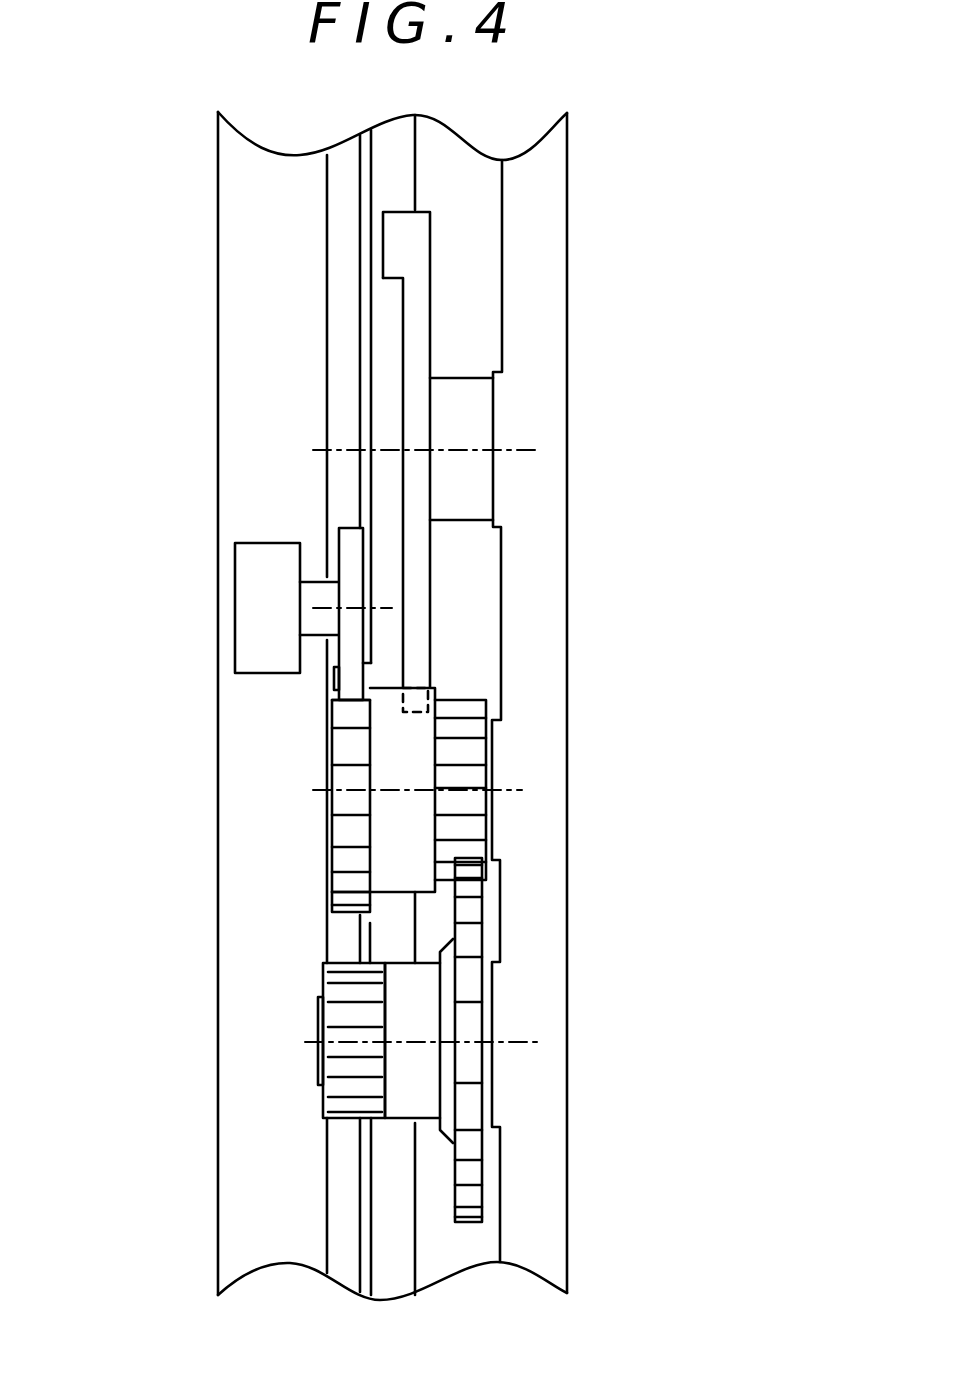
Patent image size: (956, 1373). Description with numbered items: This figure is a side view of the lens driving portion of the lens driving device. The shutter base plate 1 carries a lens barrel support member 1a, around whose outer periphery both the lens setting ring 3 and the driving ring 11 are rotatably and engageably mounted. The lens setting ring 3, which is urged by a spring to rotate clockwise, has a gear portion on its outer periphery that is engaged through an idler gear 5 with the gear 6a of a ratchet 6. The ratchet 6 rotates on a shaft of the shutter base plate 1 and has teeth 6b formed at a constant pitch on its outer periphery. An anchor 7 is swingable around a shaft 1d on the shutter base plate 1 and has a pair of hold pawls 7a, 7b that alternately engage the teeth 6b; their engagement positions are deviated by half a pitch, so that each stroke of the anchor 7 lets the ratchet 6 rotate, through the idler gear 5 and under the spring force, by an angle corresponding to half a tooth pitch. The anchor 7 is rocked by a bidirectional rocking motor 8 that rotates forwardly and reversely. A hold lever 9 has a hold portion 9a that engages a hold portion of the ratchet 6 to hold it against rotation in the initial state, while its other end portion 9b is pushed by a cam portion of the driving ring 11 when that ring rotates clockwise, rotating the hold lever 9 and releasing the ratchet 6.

The shutter base plate 1 is at (532, 285).
The lens barrel support member 1a is at (245, 1222).
The shaft 1d is at (312, 618).
The lens setting ring 3 is at (348, 417).
The idler gear 5 is at (410, 998).
The ratchet 6 is at (453, 793).
The gear 6a is at (472, 727).
The teeth 6b is at (350, 717).
The anchor 7 is at (353, 572).
The hold pawl 7a is at (352, 682).
The hold pawl 7b is at (257, 675).
The bidirectional rocking motor 8 is at (247, 582).
The hold lever 9 is at (455, 418).
The hold portion 9a is at (422, 699).
The end portion 9b is at (392, 242).
The driving ring 11 is at (385, 338).